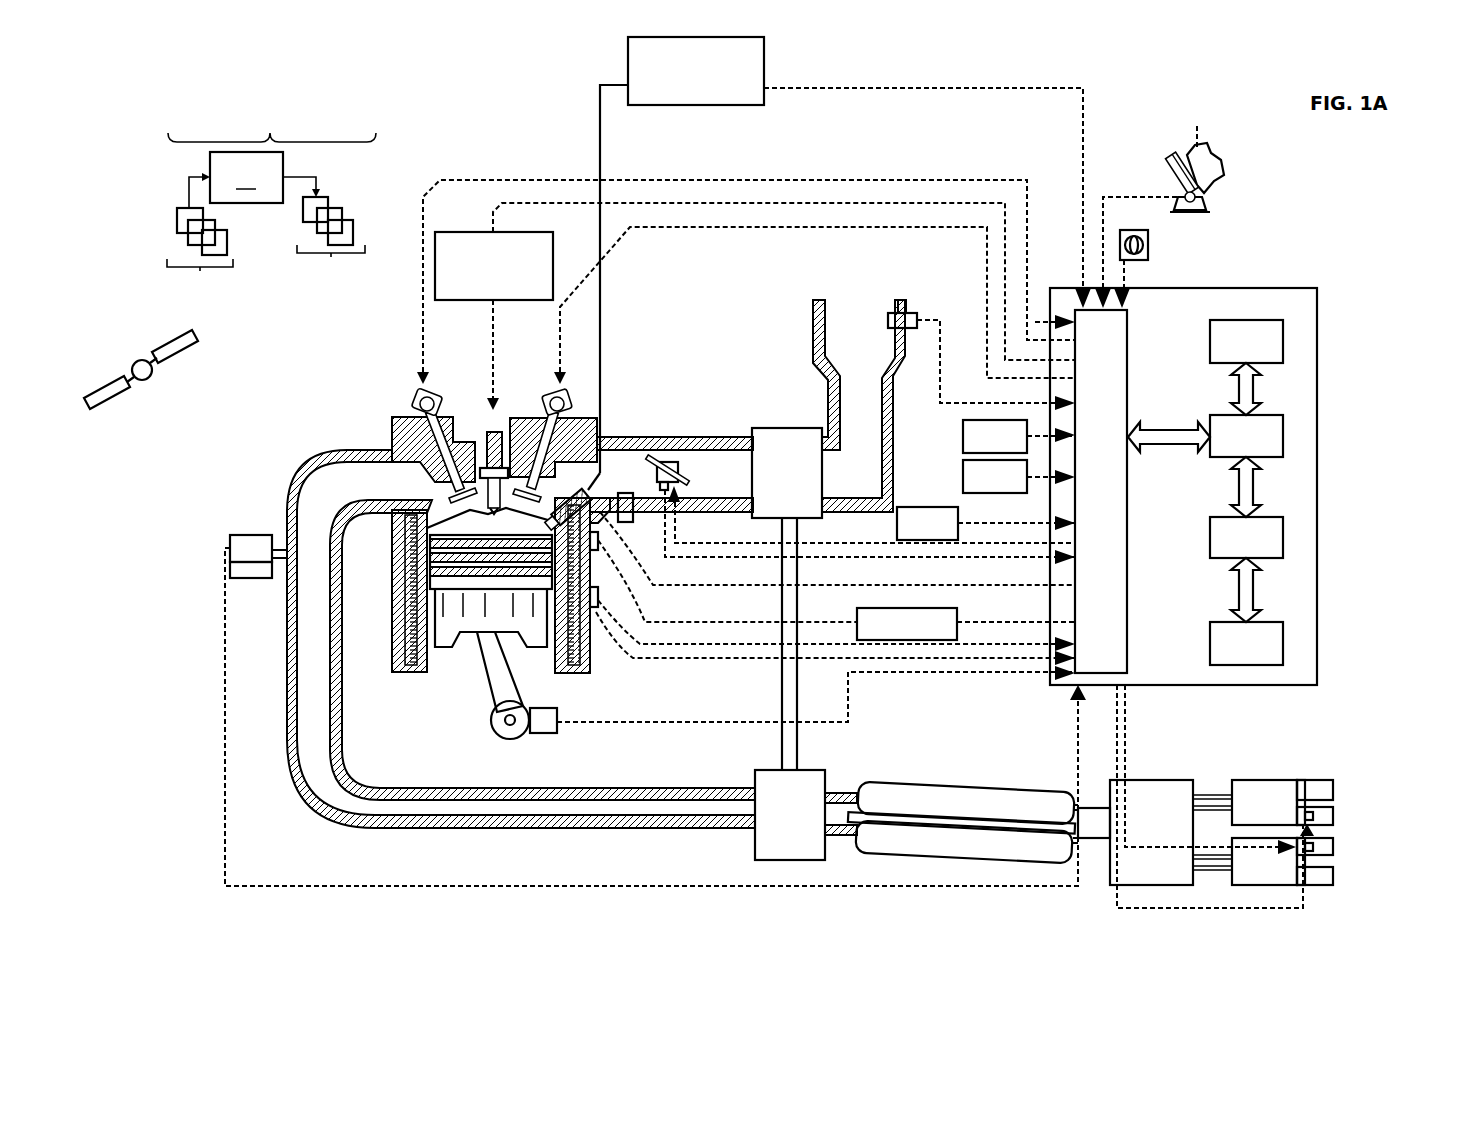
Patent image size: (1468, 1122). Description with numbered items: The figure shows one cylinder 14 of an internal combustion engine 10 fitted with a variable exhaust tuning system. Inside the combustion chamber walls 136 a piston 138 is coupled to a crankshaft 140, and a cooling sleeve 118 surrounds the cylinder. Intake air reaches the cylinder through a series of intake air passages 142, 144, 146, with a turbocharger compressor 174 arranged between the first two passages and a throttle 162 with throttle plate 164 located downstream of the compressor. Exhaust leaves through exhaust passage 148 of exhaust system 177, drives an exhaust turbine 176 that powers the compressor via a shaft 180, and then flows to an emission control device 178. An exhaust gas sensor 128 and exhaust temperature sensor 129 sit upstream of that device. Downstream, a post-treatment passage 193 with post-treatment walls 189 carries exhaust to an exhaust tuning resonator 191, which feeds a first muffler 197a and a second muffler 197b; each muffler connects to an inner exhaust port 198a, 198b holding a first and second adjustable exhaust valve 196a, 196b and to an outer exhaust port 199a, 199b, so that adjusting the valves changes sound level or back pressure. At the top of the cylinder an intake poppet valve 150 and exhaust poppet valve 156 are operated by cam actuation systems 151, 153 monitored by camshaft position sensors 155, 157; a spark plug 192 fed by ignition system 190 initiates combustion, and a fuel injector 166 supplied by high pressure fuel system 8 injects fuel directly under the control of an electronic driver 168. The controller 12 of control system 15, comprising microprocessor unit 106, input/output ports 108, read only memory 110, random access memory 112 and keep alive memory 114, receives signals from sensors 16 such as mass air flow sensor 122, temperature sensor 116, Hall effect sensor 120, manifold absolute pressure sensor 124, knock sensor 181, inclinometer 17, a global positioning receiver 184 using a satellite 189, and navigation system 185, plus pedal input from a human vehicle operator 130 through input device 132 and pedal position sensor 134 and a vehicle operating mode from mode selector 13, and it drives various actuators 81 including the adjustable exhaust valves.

The high pressure fuel system 8 is at (765, 50).
The internal combustion engine 10 is at (522, 112).
The controller 12 is at (1227, 483).
The mode selector 13 is at (1148, 243).
The cylinder 14 is at (392, 545).
The control system 15 is at (272, 157).
The sensors 16 is at (165, 252).
The inclinometer 17 is at (1019, 436).
The actuators 81 is at (340, 241).
The microprocessor unit 106 is at (1283, 436).
The input/output ports 108 is at (1128, 320).
The read only memory 110 is at (1283, 338).
The random access memory 112 is at (1283, 540).
The keep alive memory 114 is at (1283, 650).
The temperature sensor 116 is at (598, 553).
The cooling sleeve 118 is at (594, 640).
The Hall effect sensor 120 is at (545, 735).
The mass air flow sensor 122 is at (912, 313).
The manifold absolute pressure sensor 124 is at (625, 522).
The exhaust gas sensor 128 is at (230, 546).
The exhaust temperature sensor 129 is at (230, 570).
The human vehicle operator 130 is at (1218, 160).
The input device 132 is at (1176, 178).
The pedal position sensor 134 is at (1198, 200).
The combustion chamber walls 136 is at (425, 672).
The piston 138 is at (475, 620).
The crankshaft 140 is at (503, 738).
The intake air passage 142 is at (876, 347).
The intake air passage 144 is at (737, 483).
The intake air passage 146 is at (636, 481).
The exhaust passage 148 is at (374, 492).
The intake poppet valve 150 is at (503, 440).
The cam actuation system 151 is at (560, 414).
The cam actuation system 153 is at (414, 418).
The camshaft position sensor 155 is at (567, 393).
The exhaust poppet valve 156 is at (398, 455).
The camshaft position sensor 157 is at (413, 395).
The throttle 162 is at (672, 462).
The throttle plate 164 is at (650, 456).
The fuel injector 166 is at (572, 502).
The electronic driver 168 is at (856, 612).
The compressor 174 is at (773, 428).
The exhaust turbine 176 is at (755, 852).
The exhaust system 177 is at (330, 850).
The emission control device 178 is at (905, 785).
The shaft 180 is at (790, 730).
The knock sensor 181 is at (593, 647).
The global positioning receiver 184 is at (1019, 476).
The vehicle navigation system 185 is at (986, 523).
The satellite 189 is at (183, 352).
The ignition system 190 is at (455, 232).
The exhaust tuning resonator 191 is at (1135, 780).
The spark plug 192 is at (488, 436).
The post-treatment passage 193 is at (1092, 824).
The first adjustable exhaust valve 196a is at (1315, 807).
The second adjustable exhaust valve 196b is at (1315, 860).
The first muffler 197a is at (1262, 780).
The second muffler 197b is at (1290, 885).
The first muffler inner exhaust port 198a is at (1333, 815).
The second muffler inner exhaust port 198b is at (1333, 845).
The first muffler outer exhaust port 199a is at (1320, 780).
The second muffler outer exhaust port 199b is at (1333, 875).